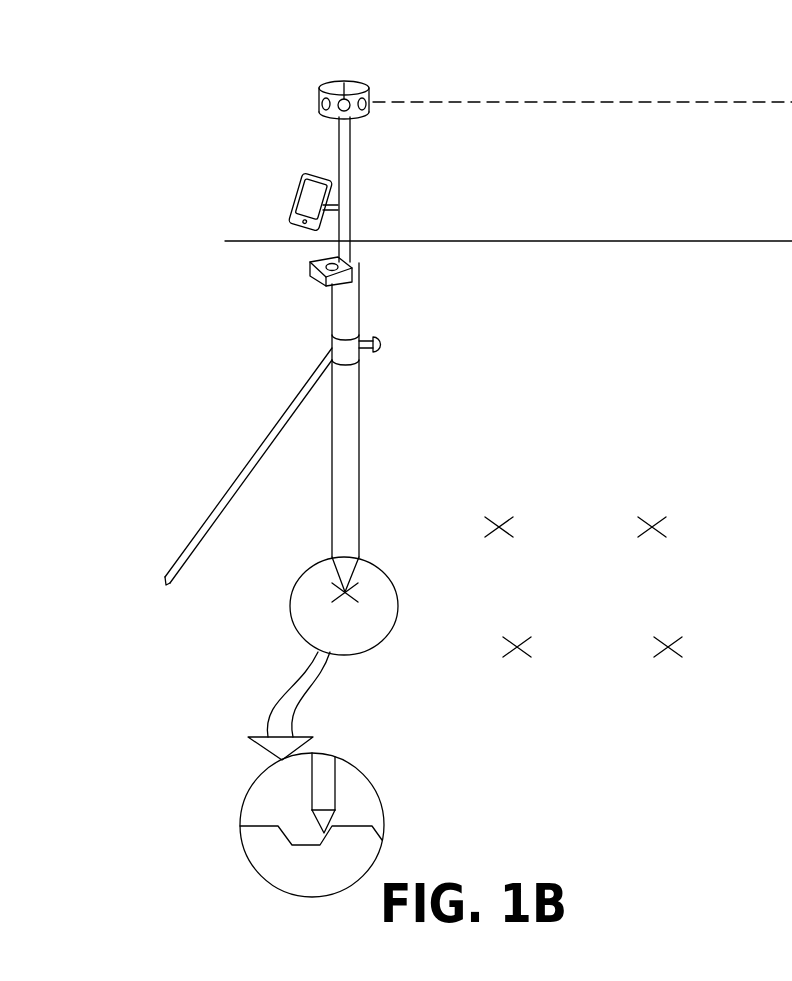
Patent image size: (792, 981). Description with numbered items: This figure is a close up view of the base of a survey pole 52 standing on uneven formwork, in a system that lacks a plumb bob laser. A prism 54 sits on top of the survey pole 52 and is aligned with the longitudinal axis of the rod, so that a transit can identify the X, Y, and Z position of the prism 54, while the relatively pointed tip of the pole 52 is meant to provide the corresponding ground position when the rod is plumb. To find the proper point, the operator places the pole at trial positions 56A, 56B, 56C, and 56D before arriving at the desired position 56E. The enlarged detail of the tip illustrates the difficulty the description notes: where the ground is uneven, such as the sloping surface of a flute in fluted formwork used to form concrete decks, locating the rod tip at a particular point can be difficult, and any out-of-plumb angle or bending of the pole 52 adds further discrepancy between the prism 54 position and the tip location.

The survey pole 52 is at (252, 150).
The prism 54 is at (356, 84).
The position 56A is at (665, 527).
The position 56B is at (681, 647).
The position 56C is at (530, 647).
The position 56D is at (512, 527).
The desired position 56E is at (352, 592).